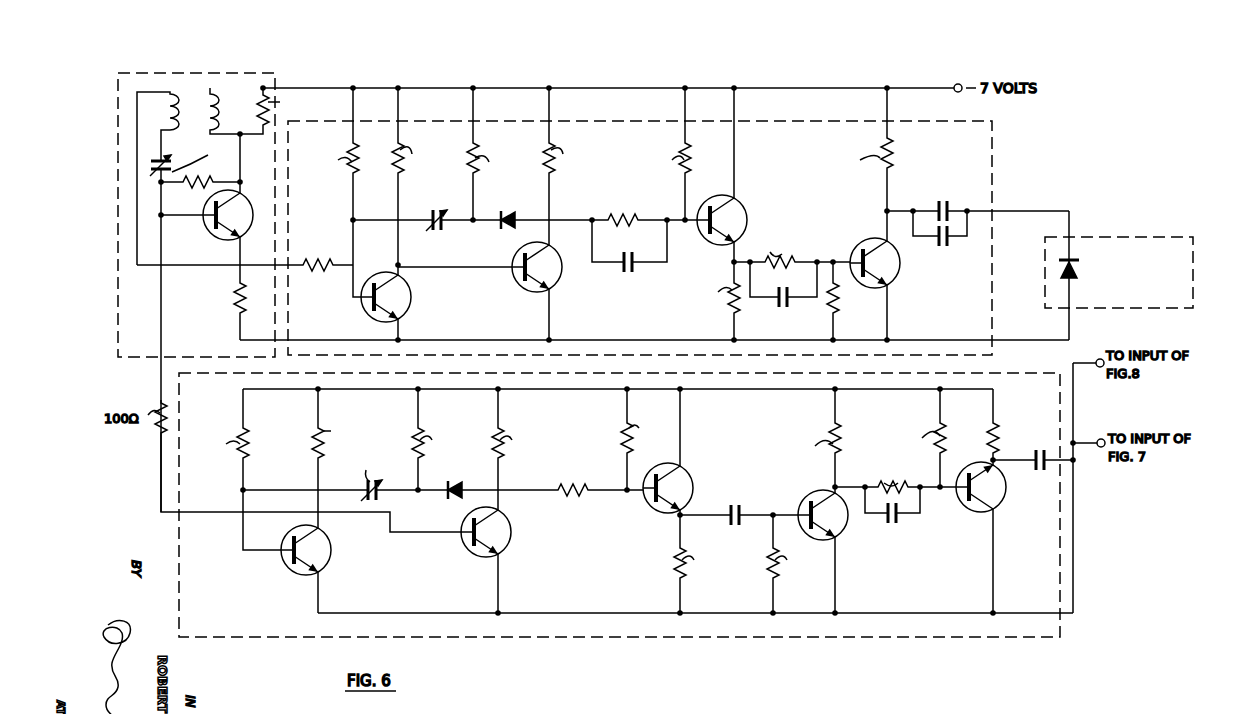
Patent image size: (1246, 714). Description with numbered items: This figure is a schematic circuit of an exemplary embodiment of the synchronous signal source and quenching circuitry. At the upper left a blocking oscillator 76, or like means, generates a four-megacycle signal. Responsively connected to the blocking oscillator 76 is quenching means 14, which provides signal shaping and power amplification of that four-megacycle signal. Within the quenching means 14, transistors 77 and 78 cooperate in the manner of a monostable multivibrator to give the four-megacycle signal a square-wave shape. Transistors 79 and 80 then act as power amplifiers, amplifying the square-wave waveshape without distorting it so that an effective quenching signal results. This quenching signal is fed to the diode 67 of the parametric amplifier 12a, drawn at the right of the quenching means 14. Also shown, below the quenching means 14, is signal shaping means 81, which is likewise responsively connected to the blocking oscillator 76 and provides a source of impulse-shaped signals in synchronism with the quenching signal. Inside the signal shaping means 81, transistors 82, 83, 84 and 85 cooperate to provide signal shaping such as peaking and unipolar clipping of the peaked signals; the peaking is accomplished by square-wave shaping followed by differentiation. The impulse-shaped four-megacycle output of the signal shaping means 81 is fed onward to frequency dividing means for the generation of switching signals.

The blocking oscillator 76 is at (228, 73).
The quenching means 14 is at (993, 148).
The parametric amplifier 12a is at (1093, 237).
The diode 67 is at (1080, 272).
The transistor 77 is at (410, 290).
The transistor 78 is at (557, 278).
The transistor 79 is at (744, 208).
The transistor 80 is at (893, 282).
The signal shaping means 81 is at (1010, 637).
The transistor 82 is at (322, 548).
The transistor 83 is at (500, 528).
The transistor 84 is at (682, 478).
The transistor 85 is at (840, 535).